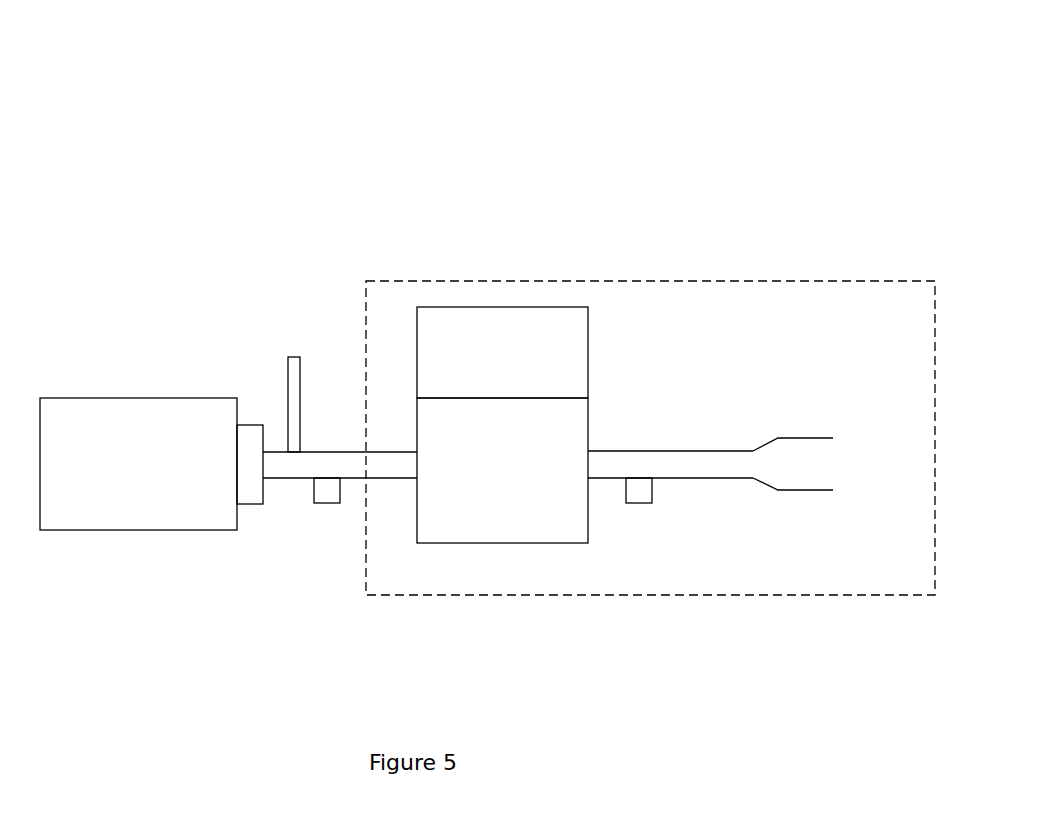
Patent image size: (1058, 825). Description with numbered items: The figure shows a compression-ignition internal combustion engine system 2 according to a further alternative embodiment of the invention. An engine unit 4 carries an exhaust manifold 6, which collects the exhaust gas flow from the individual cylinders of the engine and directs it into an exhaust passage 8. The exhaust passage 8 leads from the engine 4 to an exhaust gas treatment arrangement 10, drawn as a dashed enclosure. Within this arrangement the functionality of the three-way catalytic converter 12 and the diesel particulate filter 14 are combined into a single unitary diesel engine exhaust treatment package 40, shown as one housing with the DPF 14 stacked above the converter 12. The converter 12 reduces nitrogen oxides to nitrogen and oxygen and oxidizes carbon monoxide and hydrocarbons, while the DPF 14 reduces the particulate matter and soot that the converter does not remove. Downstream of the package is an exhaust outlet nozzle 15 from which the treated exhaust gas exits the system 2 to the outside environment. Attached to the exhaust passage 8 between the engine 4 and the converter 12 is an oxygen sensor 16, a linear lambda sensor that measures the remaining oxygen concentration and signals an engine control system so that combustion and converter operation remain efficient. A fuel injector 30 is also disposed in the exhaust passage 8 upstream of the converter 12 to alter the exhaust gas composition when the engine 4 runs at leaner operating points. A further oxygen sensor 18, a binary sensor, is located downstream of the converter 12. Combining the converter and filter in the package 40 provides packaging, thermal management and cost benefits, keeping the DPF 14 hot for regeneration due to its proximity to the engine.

The compression-ignition internal combustion engine system 2 is at (592, 89).
The engine unit 4 is at (132, 398).
The exhaust manifold 6 is at (250, 425).
The exhaust passage 8 is at (327, 452).
The exhaust gas treatment arrangement 10 is at (625, 279).
The 3-way catalytic converter 12 is at (470, 517).
The diesel particulate filter 14 is at (470, 307).
The exhaust outlet nozzle 15 is at (793, 438).
The oxygen sensor 16 is at (312, 504).
The further oxygen sensor 18 is at (637, 503).
The fuel injector 30 is at (292, 357).
The diesel engine exhaust treatment package 40 is at (494, 546).